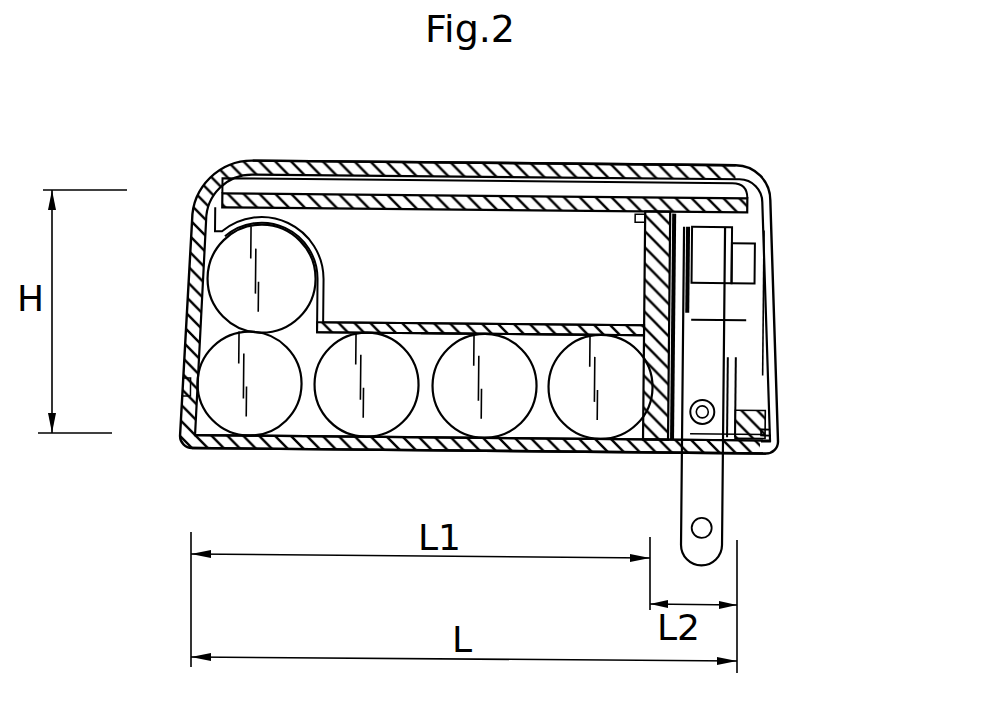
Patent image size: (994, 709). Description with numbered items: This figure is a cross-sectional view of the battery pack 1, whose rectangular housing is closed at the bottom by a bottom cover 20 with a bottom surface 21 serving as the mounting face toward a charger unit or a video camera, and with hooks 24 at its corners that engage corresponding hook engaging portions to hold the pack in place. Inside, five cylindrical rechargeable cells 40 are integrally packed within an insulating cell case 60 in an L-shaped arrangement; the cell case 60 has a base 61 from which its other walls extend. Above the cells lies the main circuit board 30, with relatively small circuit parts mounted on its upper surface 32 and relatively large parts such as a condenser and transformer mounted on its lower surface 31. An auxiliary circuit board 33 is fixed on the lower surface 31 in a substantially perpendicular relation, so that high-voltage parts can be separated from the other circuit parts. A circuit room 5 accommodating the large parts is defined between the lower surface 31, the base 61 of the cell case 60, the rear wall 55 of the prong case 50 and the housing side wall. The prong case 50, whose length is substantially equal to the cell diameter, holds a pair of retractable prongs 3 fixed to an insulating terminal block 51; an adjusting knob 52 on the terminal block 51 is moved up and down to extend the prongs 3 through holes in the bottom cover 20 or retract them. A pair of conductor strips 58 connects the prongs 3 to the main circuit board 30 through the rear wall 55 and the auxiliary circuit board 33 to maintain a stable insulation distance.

The battery pack 1 is at (270, 162).
The retractable prongs 3 is at (705, 378).
The circuit room 5 is at (465, 250).
The bottom cover 20 is at (634, 450).
The bottom surface 21 is at (552, 450).
The hooks 24 is at (768, 432).
The main circuit board 30 is at (503, 208).
The lower surface 31 is at (408, 228).
The upper surface 32 is at (393, 185).
The auxiliary circuit board 33 is at (635, 260).
The rechargeable cells 40 is at (225, 273).
The prong case 50 is at (737, 316).
The terminal block 51 is at (703, 250).
The adjusting knob 52 is at (750, 263).
The rear wall 55 is at (670, 213).
The conductor strips 58 is at (675, 362).
The cell case 60 is at (380, 325).
The base 61 is at (518, 330).